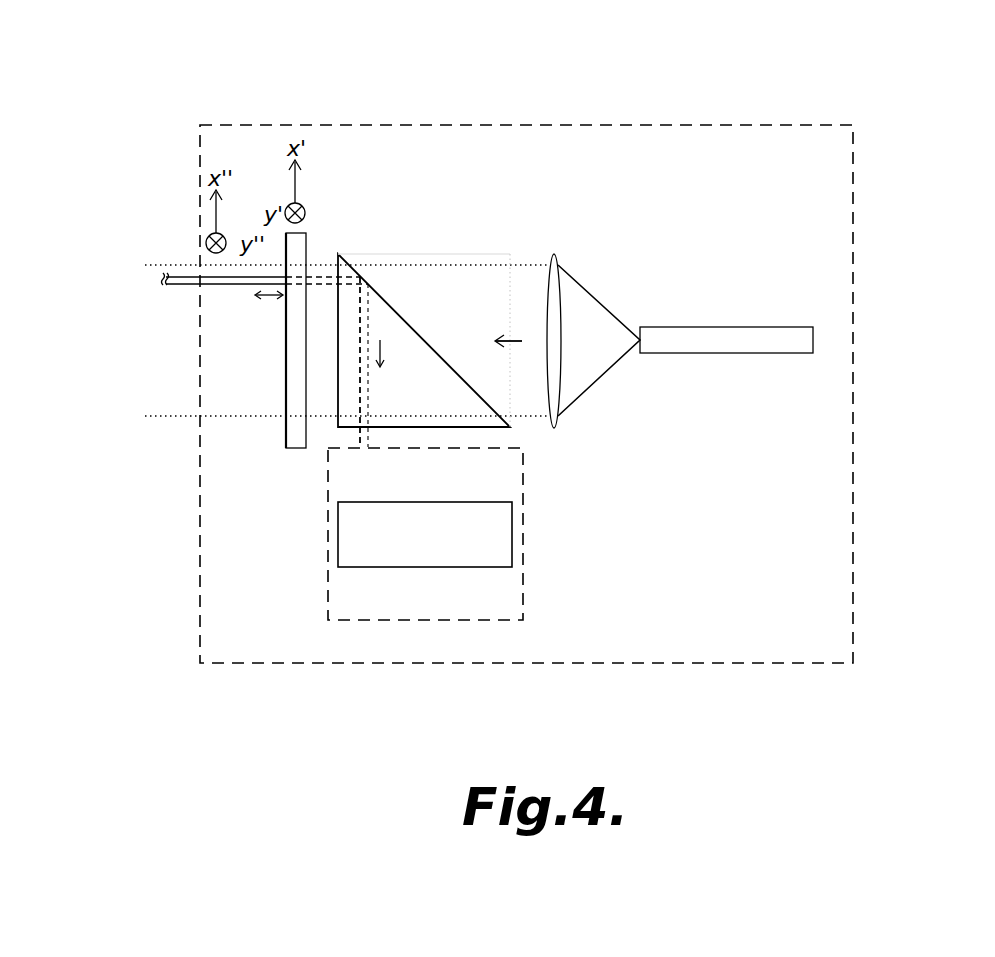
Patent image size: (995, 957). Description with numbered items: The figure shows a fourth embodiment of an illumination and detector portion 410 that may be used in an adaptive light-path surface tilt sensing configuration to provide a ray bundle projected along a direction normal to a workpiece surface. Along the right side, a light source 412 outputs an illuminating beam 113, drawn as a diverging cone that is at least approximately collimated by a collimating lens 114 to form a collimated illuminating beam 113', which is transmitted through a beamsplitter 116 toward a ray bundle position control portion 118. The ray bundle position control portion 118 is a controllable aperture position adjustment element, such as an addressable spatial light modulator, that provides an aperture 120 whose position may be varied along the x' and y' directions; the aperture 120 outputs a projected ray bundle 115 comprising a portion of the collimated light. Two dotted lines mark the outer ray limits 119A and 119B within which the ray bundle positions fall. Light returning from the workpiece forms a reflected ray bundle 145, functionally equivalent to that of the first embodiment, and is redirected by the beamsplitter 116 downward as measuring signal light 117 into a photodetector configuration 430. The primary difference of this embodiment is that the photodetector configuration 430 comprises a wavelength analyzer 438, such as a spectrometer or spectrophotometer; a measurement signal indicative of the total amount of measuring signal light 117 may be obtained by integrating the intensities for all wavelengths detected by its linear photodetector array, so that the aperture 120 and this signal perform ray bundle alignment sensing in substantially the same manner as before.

The illumination and detector portion 410 is at (847, 123).
The outer ray limit 119A is at (185, 263).
The outer ray limit 119B is at (188, 418).
The projected ray bundle 115 is at (177, 310).
The reflected ray bundle 145 is at (187, 288).
The aperture 120 is at (266, 281).
The ray bundle position control portion 118 is at (293, 450).
The measuring signal light 117 is at (360, 431).
The beamsplitter 116 is at (462, 252).
The collimated illuminating beam 113' is at (533, 273).
The collimating lens 114 is at (556, 254).
The illuminating beam 113 is at (600, 335).
The light source 412 is at (791, 327).
The photodetector configuration 430 is at (523, 450).
The wavelength analyzer 438 is at (512, 535).